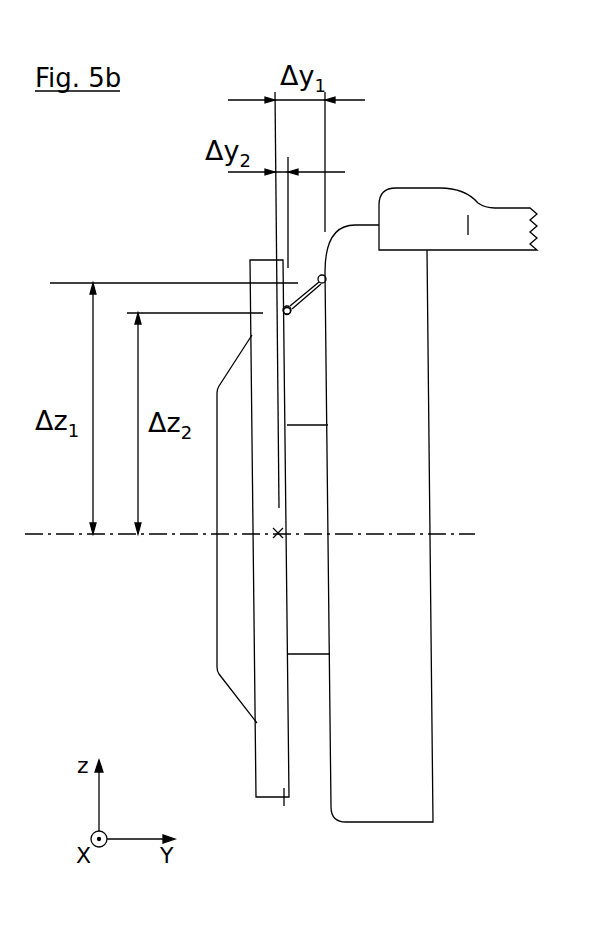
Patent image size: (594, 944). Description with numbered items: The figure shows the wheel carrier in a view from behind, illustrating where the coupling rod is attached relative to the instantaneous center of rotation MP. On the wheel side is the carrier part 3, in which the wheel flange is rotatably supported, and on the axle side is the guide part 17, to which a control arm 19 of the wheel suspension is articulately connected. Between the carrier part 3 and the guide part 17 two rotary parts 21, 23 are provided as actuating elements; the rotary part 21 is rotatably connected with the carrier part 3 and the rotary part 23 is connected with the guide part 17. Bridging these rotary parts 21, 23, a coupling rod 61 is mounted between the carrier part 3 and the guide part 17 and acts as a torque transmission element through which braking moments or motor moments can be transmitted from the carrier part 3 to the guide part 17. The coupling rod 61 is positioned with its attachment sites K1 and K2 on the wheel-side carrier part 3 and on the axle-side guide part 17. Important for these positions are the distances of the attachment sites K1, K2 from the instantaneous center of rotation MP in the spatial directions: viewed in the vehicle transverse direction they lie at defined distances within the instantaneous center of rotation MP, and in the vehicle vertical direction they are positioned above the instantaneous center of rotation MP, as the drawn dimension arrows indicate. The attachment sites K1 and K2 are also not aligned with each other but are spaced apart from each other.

The carrier part 3 is at (260, 260).
The guide part 17 is at (432, 467).
The control arm 19 is at (520, 208).
The rotary part 21 is at (420, 525).
The rotary part 23 is at (303, 425).
The coupling rod 61 is at (291, 308).
The attachment site K1 is at (326, 279).
The attachment site K2 is at (291, 316).
The instantaneous center of rotation MP is at (278, 533).